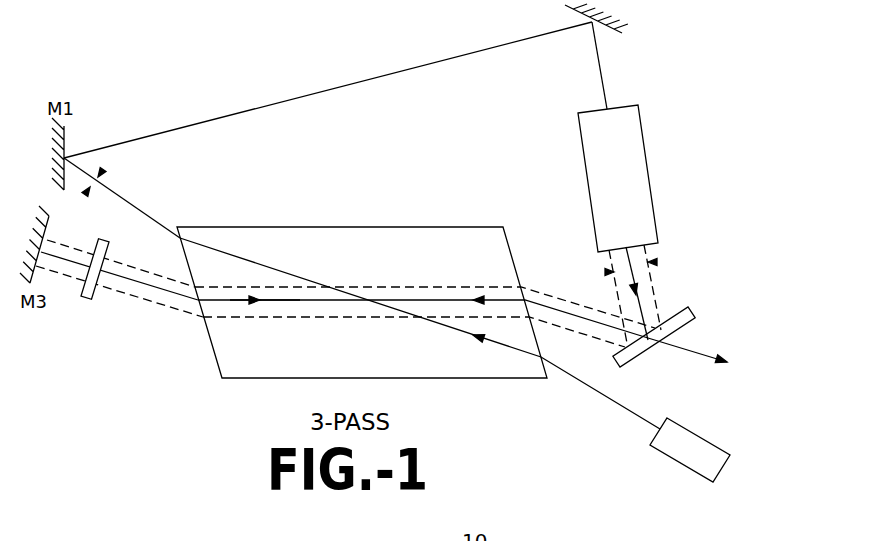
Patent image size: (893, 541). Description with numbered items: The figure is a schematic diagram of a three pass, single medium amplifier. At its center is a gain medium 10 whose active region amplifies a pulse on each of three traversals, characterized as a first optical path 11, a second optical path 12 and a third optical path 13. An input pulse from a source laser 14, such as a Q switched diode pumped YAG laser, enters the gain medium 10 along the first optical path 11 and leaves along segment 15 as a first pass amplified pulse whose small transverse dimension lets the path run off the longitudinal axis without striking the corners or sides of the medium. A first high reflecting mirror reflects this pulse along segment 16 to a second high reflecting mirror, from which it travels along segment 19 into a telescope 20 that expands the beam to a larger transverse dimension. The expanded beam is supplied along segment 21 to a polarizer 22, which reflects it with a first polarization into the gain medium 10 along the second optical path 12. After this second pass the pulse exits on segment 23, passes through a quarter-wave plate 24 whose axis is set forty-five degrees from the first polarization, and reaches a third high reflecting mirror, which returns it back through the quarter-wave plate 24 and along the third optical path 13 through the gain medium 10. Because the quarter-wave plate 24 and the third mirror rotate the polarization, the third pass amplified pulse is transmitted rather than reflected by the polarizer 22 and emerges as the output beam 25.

The gain medium 10 is at (433, 225).
The first optical path 11 is at (473, 340).
The second optical path 12 is at (474, 297).
The third optical path 13 is at (258, 303).
The source laser 14 is at (683, 428).
The segment 15 is at (137, 210).
The segment 16 is at (192, 122).
The segment 19 is at (604, 78).
The telescope 20 is at (643, 170).
The segment 21 is at (638, 300).
The polarizer 22 is at (680, 312).
The segment 23 is at (153, 287).
The quarter-wave plate 24 is at (97, 290).
The output beam 25 is at (728, 360).